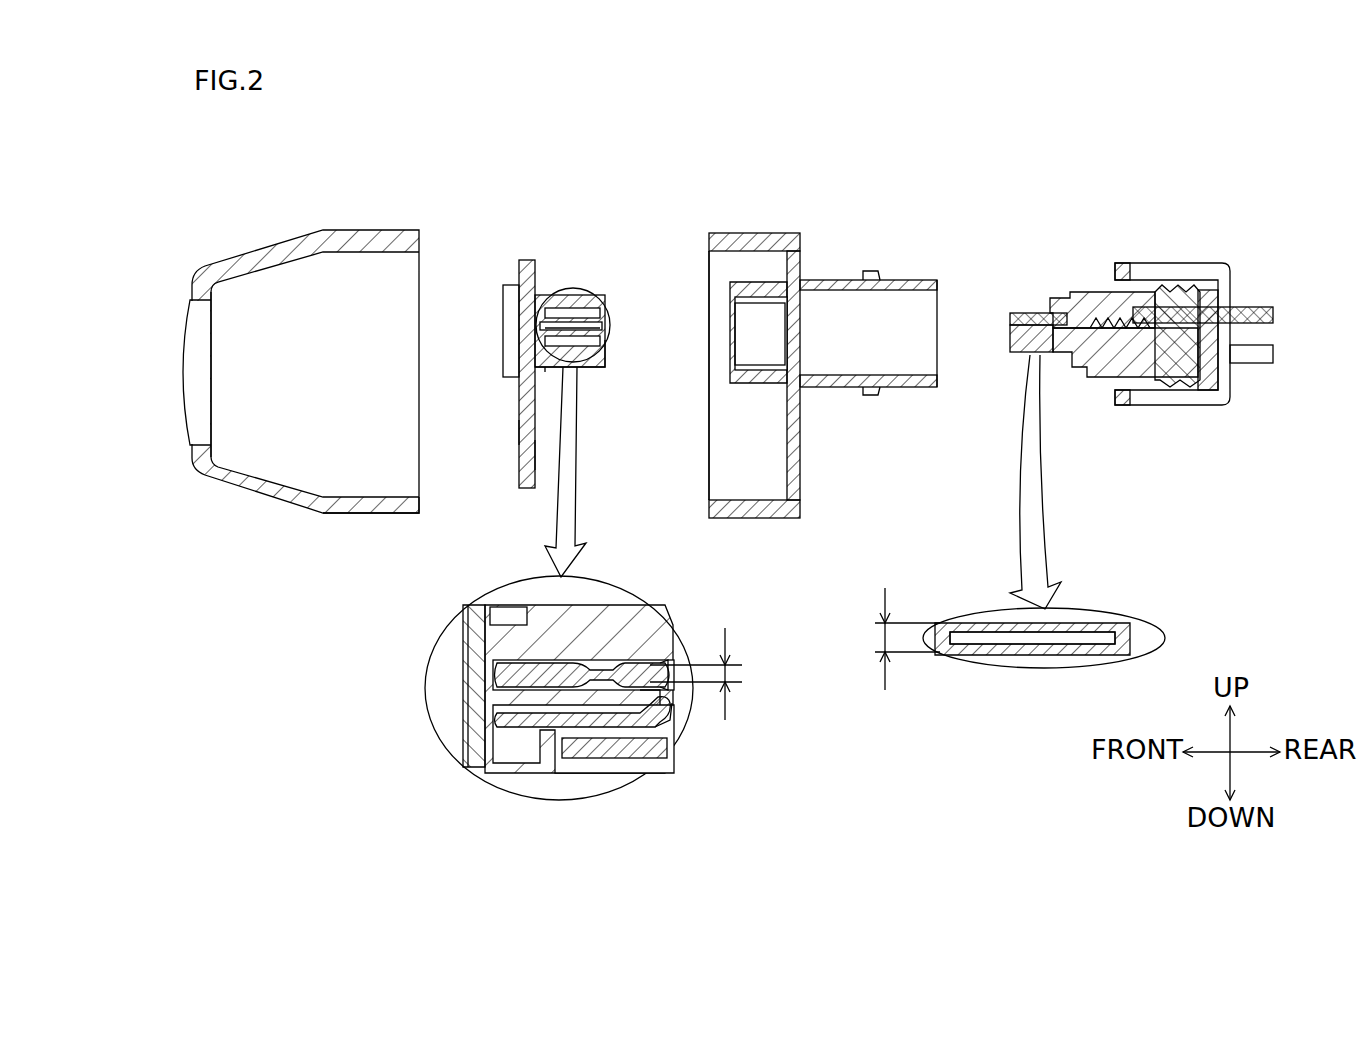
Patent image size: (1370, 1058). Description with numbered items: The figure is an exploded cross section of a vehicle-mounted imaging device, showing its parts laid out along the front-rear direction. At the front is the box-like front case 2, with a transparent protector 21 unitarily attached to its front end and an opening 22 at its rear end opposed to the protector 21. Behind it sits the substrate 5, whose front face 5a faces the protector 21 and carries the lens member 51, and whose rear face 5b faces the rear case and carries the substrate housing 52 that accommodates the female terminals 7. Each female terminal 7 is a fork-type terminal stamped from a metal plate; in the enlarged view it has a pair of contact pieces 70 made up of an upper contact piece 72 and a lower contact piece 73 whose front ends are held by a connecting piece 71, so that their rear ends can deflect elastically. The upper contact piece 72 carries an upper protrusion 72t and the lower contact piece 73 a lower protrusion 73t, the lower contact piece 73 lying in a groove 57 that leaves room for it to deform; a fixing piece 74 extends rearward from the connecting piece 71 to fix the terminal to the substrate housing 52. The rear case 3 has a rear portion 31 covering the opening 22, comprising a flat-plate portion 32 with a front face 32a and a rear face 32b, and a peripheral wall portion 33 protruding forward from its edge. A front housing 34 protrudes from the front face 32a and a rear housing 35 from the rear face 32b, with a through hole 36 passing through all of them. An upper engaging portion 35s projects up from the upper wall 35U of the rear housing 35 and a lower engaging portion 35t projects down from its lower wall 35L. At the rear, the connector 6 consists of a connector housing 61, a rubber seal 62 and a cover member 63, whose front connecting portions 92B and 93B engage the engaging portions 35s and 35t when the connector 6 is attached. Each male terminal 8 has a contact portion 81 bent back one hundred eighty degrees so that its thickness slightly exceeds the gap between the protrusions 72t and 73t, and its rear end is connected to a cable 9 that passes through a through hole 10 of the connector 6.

The front case 2 is at (350, 194).
The protector 21 is at (190, 372).
The opening 22 is at (422, 473).
The rear case 3 is at (802, 293).
The rear portion 31 is at (840, 180).
The flat-plate portion 32 is at (800, 262).
The front face 32a is at (787, 432).
The rear face 32b is at (800, 465).
The peripheral wall portion 33 is at (750, 243).
The front housing 34 is at (712, 378).
The rear housing 35 is at (888, 349).
The upper wall 35U is at (908, 283).
The lower wall 35L is at (912, 392).
The upper engaging portion 35s is at (868, 277).
The lower engaging portion 35t is at (873, 396).
The through hole 36 is at (790, 365).
The substrate 5 is at (524, 233).
The front face 5a is at (519, 432).
The rear face 5b is at (537, 452).
The lens member 51 is at (503, 318).
The substrate housing 52 is at (592, 380).
The groove 57 is at (668, 703).
The connector 6 is at (1090, 417).
The connector housing 61 is at (1078, 278).
The rubber seal 62 is at (1180, 280).
The cover member 63 is at (1255, 282).
The female terminal 7 is at (558, 302).
The pair of contact pieces 70 is at (535, 583).
The connecting piece 71 is at (545, 332).
The upper contact piece 72 is at (497, 634).
The upper protrusion 72t is at (652, 640).
The lower contact piece 73 is at (497, 710).
The lower protrusion 73t is at (668, 742).
The fixing piece 74 is at (515, 770).
The male terminal 8 is at (1075, 368).
The contact portion 81 is at (1017, 352).
The cable 9 is at (1275, 315).
The through hole 10 is at (1245, 365).
The front connecting portion 92B is at (1125, 268).
The front connecting portion 93B is at (1122, 402).